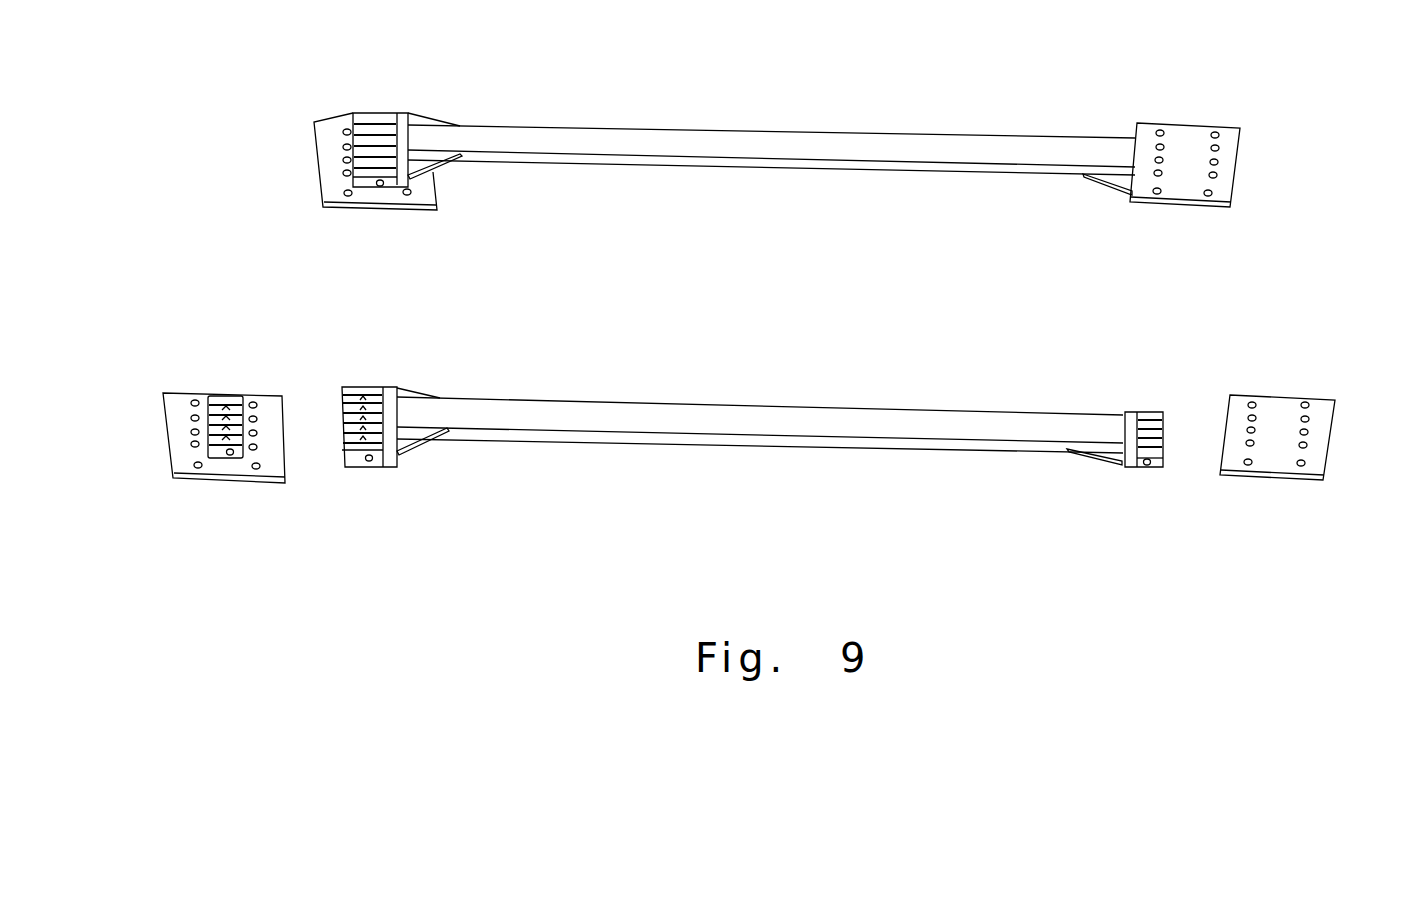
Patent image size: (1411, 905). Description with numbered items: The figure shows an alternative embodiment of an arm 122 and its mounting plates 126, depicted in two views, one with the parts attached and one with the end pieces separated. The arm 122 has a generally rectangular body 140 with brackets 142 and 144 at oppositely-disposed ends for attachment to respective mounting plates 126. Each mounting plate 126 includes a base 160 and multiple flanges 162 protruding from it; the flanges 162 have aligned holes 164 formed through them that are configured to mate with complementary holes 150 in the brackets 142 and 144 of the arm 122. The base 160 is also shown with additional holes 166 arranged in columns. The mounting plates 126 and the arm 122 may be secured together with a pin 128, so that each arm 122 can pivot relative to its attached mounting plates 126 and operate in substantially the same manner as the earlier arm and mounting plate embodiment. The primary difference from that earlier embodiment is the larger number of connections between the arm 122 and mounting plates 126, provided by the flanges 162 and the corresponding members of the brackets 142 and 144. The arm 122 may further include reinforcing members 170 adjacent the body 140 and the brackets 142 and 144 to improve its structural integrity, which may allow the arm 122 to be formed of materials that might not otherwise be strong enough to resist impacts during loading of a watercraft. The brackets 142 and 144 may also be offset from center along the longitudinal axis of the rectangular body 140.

The arm 122 is at (961, 133).
The mounting plate 126 is at (312, 165).
The pin 128 is at (378, 188).
The rectangular body 140 is at (789, 138).
The bracket 142 is at (1140, 470).
The bracket 144 is at (378, 112).
The holes 150 is at (371, 462).
The base 160 is at (326, 128).
The flanges 162 is at (223, 393).
The aligned holes 164 is at (231, 455).
The holes 166 is at (1210, 191).
The reinforcing members 170 is at (428, 116).